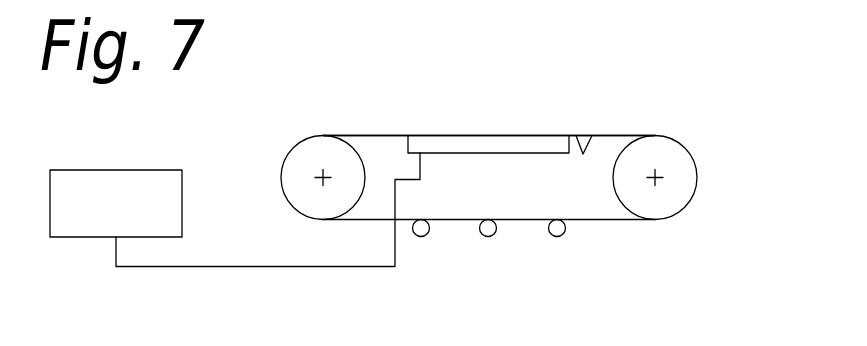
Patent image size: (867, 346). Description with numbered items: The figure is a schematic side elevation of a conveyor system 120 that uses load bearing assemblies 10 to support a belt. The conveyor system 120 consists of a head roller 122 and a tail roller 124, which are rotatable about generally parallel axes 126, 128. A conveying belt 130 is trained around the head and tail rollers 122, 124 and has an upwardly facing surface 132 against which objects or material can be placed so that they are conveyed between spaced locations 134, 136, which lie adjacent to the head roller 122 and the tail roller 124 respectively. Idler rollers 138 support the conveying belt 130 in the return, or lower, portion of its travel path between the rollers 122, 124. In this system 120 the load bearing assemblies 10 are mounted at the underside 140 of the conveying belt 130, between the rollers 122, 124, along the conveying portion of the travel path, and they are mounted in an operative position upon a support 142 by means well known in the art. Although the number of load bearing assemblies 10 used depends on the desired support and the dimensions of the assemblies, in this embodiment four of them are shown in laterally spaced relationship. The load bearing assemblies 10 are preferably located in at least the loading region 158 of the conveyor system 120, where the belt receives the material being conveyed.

The load bearing assembly 10 is at (485, 147).
The conveyor system 120 is at (605, 115).
The head roller 122 is at (303, 139).
The tail roller 124 is at (697, 172).
The axis 126 is at (323, 178).
The axis 128 is at (660, 183).
The conveying belt 130 is at (388, 136).
The upwardly facing surface 132 is at (358, 136).
The spaced location 134 is at (273, 143).
The spaced location 136 is at (703, 144).
The idler rollers 138 is at (426, 235).
The underside 140 is at (576, 135).
The support 142 is at (130, 228).
The loading region 158 is at (460, 100).